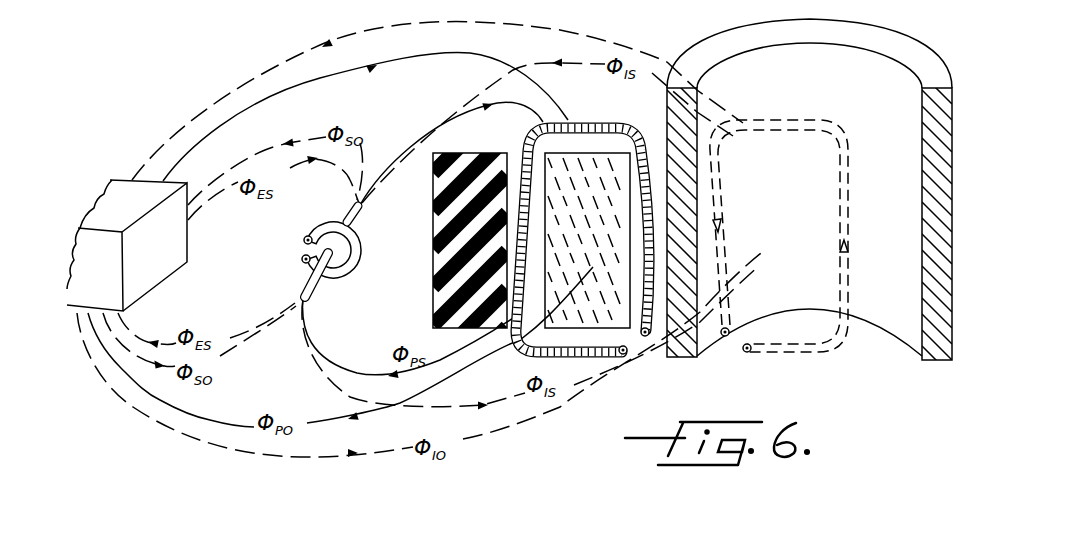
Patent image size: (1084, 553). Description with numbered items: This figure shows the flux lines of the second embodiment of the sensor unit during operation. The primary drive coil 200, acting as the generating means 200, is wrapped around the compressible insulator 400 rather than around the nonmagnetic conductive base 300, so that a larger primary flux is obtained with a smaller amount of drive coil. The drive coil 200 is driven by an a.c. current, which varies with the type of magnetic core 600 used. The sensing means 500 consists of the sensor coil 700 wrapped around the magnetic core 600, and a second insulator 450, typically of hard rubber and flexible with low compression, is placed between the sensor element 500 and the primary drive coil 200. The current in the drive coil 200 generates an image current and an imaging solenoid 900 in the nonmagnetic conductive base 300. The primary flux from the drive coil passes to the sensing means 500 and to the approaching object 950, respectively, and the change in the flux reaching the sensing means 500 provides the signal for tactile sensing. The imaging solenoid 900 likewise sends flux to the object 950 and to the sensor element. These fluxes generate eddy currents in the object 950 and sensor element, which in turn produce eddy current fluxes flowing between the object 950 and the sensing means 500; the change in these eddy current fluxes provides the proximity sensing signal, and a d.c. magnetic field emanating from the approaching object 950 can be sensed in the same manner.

The approaching object 950 is at (120, 190).
The sensing means 500 is at (290, 236).
The magnetic core 600 is at (301, 270).
The sensor coil 700 is at (362, 262).
The second insulator 450 is at (472, 162).
The compressible insulator 400 is at (587, 162).
The primary drive coil 200 is at (603, 358).
The nonmagnetic conductive base 300 is at (900, 40).
The imaging solenoid 900 is at (835, 345).